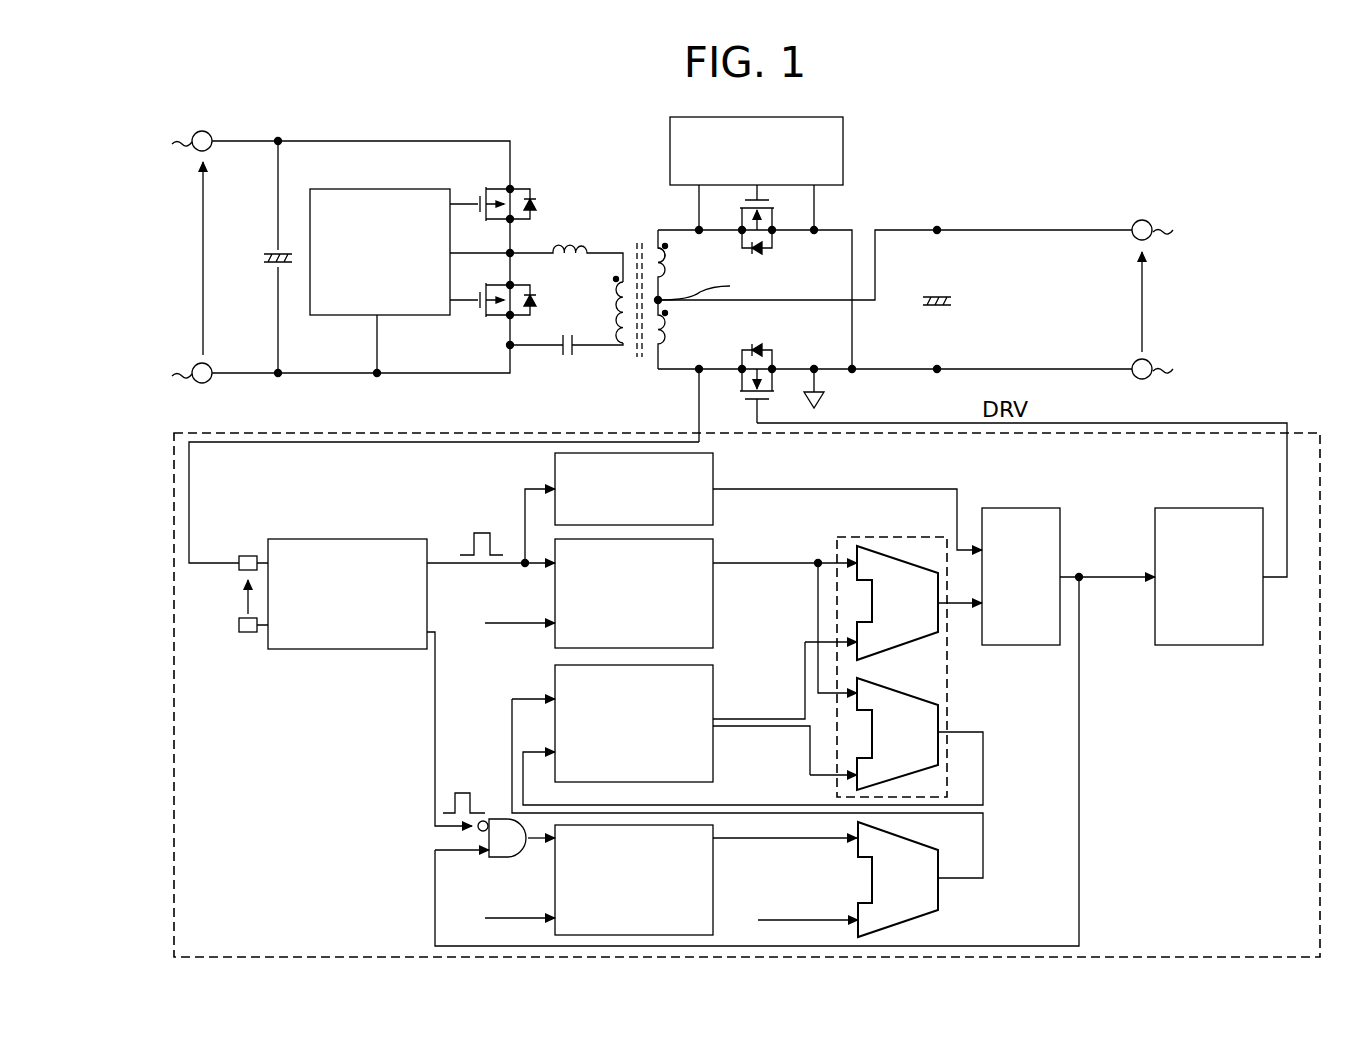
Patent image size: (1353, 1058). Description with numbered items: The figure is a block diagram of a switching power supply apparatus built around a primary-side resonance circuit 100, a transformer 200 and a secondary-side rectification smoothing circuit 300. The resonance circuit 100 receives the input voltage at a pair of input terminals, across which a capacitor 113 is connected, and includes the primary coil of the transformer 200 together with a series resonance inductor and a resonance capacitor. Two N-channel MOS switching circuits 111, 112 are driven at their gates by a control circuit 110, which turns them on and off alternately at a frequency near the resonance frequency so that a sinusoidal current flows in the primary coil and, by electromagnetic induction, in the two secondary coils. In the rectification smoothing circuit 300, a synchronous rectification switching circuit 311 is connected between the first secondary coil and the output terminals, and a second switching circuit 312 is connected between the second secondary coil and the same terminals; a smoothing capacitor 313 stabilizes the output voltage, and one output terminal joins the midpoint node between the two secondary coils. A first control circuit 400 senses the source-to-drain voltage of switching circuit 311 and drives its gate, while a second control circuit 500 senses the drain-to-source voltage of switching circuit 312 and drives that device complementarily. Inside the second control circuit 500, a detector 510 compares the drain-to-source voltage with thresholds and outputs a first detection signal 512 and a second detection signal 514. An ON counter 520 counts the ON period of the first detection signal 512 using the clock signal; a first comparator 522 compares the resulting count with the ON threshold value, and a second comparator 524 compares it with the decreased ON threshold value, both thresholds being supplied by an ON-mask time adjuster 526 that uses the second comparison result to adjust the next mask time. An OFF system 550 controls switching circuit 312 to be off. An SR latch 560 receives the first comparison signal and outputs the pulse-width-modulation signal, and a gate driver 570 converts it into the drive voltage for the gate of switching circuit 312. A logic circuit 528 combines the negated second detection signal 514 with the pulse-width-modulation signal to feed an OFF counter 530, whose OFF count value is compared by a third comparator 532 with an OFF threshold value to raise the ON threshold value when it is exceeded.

The resonance circuit 100 is at (316, 382).
The control circuit 110 is at (346, 316).
The switching circuit 111 is at (520, 192).
The switching circuit 112 is at (500, 318).
The capacitor 113 is at (274, 255).
The transformer 200 is at (640, 232).
The rectification smoothing circuit 300 is at (992, 206).
The switching circuit 311 is at (785, 212).
The switching circuit 312 is at (776, 352).
The smoothing capacitor 313 is at (958, 302).
The first control circuit 400 is at (846, 150).
The second control circuit 500 is at (1312, 432).
The detector 510 is at (379, 539).
The first detection signal 512 is at (476, 531).
The second detection signal 514 is at (463, 791).
The ON counter 520 is at (716, 598).
The first comparator 522 is at (908, 560).
The second comparator 524 is at (948, 724).
The ON-mask time adjuster 526 is at (716, 668).
The logic circuit 528 is at (490, 857).
The OFF counter 530 is at (716, 855).
The third comparator 532 is at (942, 900).
The OFF system 550 is at (716, 512).
The SR latch 560 is at (1021, 508).
The gate driver 570 is at (1214, 508).